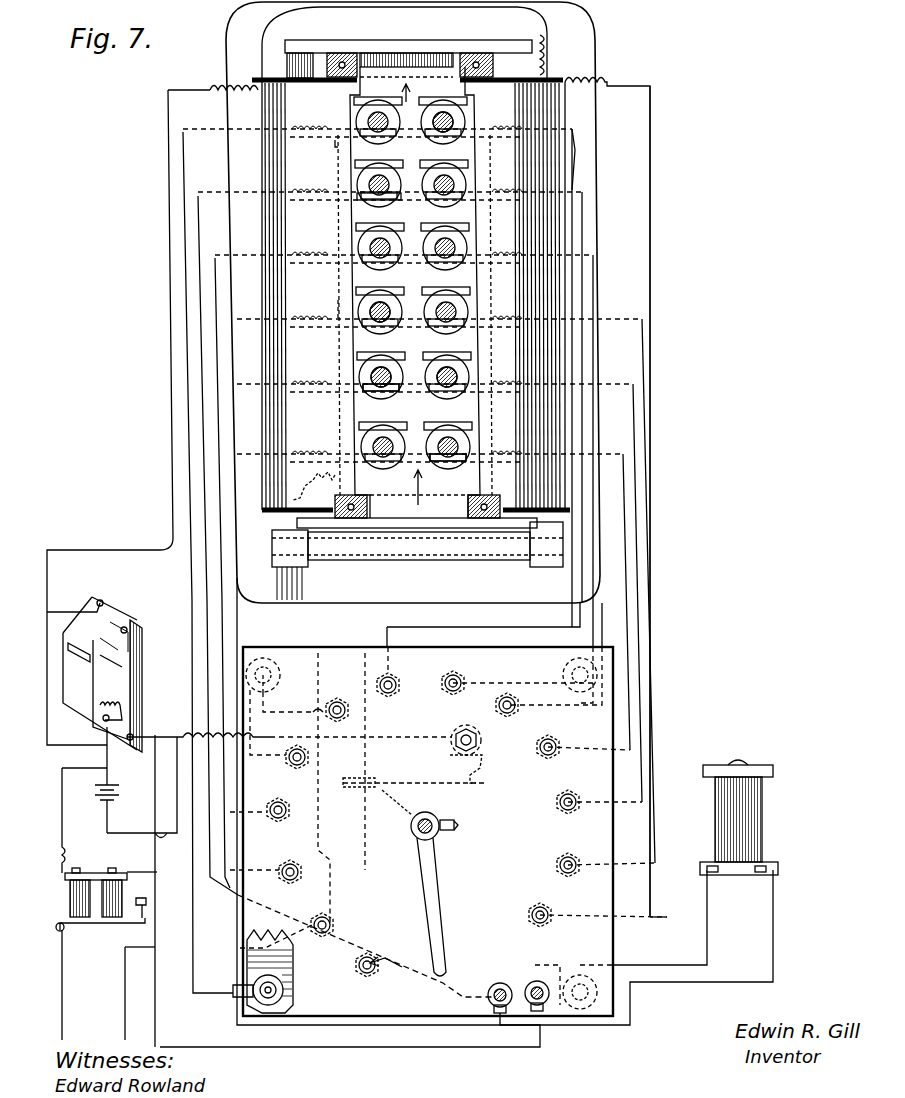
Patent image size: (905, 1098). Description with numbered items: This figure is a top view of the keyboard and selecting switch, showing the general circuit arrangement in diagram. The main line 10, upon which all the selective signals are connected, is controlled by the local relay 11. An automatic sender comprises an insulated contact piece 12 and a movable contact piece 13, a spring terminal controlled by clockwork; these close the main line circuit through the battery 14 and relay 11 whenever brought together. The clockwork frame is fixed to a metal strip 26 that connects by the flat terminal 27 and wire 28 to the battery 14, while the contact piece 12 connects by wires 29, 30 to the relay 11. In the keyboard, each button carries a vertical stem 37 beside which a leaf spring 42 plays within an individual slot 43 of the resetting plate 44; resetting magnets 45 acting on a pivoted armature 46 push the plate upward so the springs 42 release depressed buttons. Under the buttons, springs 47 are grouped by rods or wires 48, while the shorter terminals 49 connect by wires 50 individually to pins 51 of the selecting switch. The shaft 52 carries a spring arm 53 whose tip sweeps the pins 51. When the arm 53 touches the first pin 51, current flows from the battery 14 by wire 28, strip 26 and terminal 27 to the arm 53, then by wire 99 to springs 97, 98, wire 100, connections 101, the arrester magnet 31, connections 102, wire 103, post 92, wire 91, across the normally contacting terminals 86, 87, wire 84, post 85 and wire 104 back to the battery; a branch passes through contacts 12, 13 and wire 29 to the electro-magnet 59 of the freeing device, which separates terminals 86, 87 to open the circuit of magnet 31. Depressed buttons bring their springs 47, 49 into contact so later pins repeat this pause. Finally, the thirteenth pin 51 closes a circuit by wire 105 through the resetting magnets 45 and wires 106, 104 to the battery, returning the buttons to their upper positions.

The main line 10 is at (108, 985).
The local relay 11 is at (78, 893).
The insulated contact piece 12 is at (482, 750).
The movable contact piece 13 is at (418, 782).
The battery 14 is at (108, 808).
The metal strip 26 is at (295, 975).
The flat terminal 27 is at (232, 998).
The wire 28 is at (193, 945).
The wire 29 is at (390, 740).
The wire 30 is at (180, 780).
The arrester magnet 31 is at (745, 808).
The vertical stem 37 is at (440, 372).
The leaf spring 42 is at (432, 234).
The slot 43 is at (448, 130).
The resetting plate 44 is at (448, 462).
The resetting magnets 45 is at (387, 295).
The pivoted armature 46 is at (465, 548).
The spring 47 is at (356, 193).
The rods or wires 48 is at (336, 283).
The shorter terminals 49 is at (333, 140).
The wires 50 is at (211, 294).
The pins 51 is at (308, 755).
The shaft 52 is at (438, 820).
The spring arm 53 is at (440, 890).
The electro-magnet 59 is at (100, 703).
The wire 84 is at (96, 617).
The binding post 85 is at (103, 606).
The contact terminal 86 is at (80, 657).
The long spring 87 is at (112, 655).
The wire 91 is at (112, 660).
The binding post 92 is at (126, 625).
The spring 97 is at (418, 472).
The spring 98 is at (362, 465).
The wire 99 is at (300, 580).
The wire 100 is at (318, 690).
The connections 101 is at (496, 1012).
The connections 102 is at (545, 990).
The wire 103 is at (152, 690).
The wire 104 is at (80, 748).
The wire 105 is at (655, 580).
The wires 106 is at (171, 422).